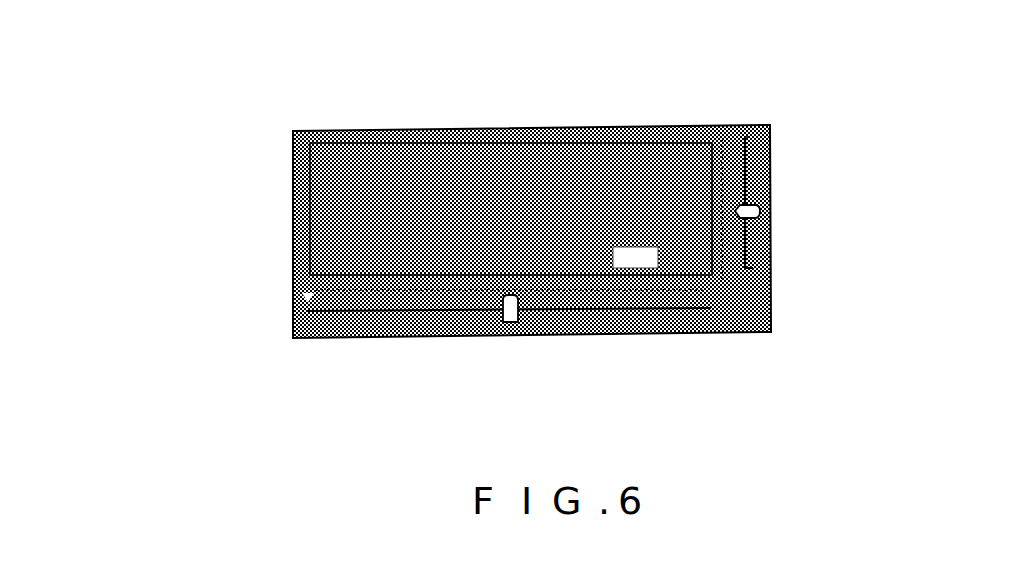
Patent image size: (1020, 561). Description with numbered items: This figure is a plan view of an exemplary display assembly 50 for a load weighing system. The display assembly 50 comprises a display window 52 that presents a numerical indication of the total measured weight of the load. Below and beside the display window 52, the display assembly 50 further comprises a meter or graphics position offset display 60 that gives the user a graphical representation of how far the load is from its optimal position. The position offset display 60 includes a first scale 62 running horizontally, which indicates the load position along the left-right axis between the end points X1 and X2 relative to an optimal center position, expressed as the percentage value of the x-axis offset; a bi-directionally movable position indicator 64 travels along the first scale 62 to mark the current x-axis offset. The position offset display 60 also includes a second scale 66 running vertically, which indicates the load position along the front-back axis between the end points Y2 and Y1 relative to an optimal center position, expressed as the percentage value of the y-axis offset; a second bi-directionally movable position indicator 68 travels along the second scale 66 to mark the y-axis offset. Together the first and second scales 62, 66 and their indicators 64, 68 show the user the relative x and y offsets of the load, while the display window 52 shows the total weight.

The display assembly 50 is at (293, 83).
The display window 52 is at (563, 160).
The meter or graphics position offset display 60 is at (762, 213).
The first scale 62 is at (350, 283).
The bi-directionally movable position indicator 64 is at (505, 325).
The second scale 66 is at (718, 156).
The bi-directionally movable position indicator 68 is at (752, 210).
The x-axis end point X1 is at (307, 320).
The x-axis end point X2 is at (712, 308).
The y-axis end point Y1 is at (750, 268).
The y-axis end point Y2 is at (747, 137).